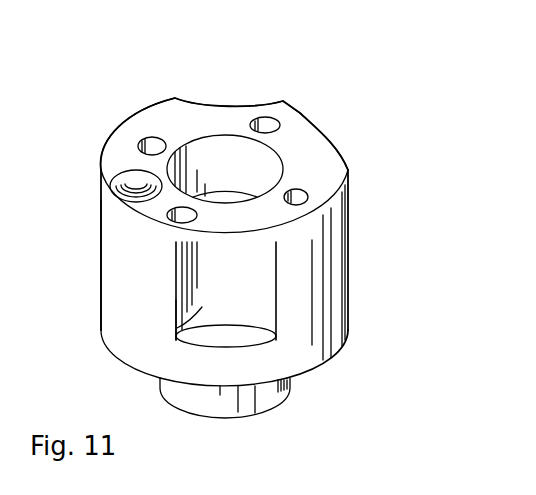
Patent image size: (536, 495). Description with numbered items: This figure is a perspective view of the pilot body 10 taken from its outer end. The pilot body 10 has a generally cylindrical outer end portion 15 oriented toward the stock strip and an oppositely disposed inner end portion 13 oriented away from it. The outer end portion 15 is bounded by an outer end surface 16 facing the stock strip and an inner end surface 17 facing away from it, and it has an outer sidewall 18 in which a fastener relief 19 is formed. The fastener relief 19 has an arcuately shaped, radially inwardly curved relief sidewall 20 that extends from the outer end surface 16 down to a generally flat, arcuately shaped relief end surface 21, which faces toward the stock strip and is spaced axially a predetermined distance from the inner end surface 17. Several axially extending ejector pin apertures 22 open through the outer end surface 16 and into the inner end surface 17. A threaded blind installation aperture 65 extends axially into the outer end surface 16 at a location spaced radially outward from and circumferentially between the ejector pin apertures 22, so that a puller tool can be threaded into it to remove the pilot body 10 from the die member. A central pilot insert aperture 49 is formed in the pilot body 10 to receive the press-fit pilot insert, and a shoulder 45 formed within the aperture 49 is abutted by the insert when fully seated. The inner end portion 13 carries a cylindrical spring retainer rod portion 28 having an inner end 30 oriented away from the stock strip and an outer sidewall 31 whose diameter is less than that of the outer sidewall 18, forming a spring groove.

The pilot body 10 is at (150, 98).
The inner end portion 13 is at (345, 343).
The outer end portion 15 is at (100, 228).
The outer end surface 16 is at (335, 177).
The inner end surface 17 is at (127, 363).
The outer sidewall 18 is at (115, 278).
The fastener relief 19 is at (177, 328).
The relief sidewall 20 is at (262, 273).
The relief end surface 21 is at (227, 325).
The ejector pin aperture 22 is at (148, 140).
The spring retainer rod portion 28 is at (289, 383).
The inner end 30 is at (250, 418).
The outer sidewall 31 is at (188, 400).
The shoulder 45 is at (237, 193).
The pilot insert aperture 49 is at (232, 148).
The threaded blind installation aperture 65 is at (112, 180).